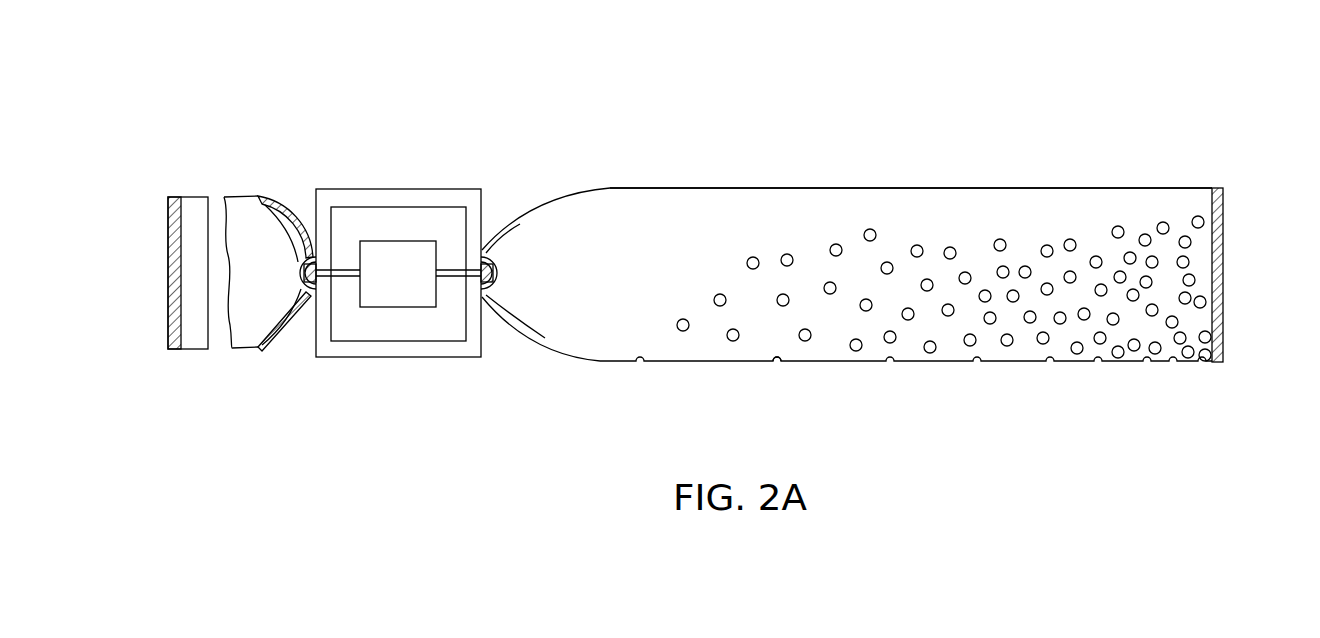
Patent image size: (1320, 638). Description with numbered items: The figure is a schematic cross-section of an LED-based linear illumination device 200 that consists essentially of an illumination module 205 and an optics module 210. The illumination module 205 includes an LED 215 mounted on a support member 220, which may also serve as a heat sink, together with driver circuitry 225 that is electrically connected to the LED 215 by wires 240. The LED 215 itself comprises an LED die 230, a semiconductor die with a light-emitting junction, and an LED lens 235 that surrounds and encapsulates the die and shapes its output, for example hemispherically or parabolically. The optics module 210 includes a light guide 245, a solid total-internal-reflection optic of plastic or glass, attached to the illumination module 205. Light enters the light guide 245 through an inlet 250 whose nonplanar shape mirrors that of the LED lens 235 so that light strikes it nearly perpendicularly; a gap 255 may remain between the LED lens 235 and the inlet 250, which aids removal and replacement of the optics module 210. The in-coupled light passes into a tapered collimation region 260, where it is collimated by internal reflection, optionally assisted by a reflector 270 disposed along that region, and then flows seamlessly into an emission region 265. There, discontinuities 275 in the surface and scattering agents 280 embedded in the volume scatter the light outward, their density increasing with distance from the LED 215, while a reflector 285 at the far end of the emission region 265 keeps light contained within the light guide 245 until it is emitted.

The illumination device 200 is at (427, 57).
The illumination module 205 is at (390, 166).
The optics module 210 is at (204, 182).
The LED 215 is at (306, 292).
The support member 220 is at (435, 358).
The driver circuitry 225 is at (390, 292).
The LED die 230 is at (262, 197).
The LED lens 235 is at (300, 226).
The wires 240 is at (348, 270).
The light guide 245 is at (1052, 212).
The inlet 250 is at (545, 340).
The gap 255 is at (496, 232).
The collimation region 260 is at (590, 213).
The emission region 265 is at (950, 348).
The reflector 270 is at (275, 345).
The discontinuities 275 is at (776, 362).
The scattering agents 280 is at (836, 244).
The reflector 285 is at (1222, 224).